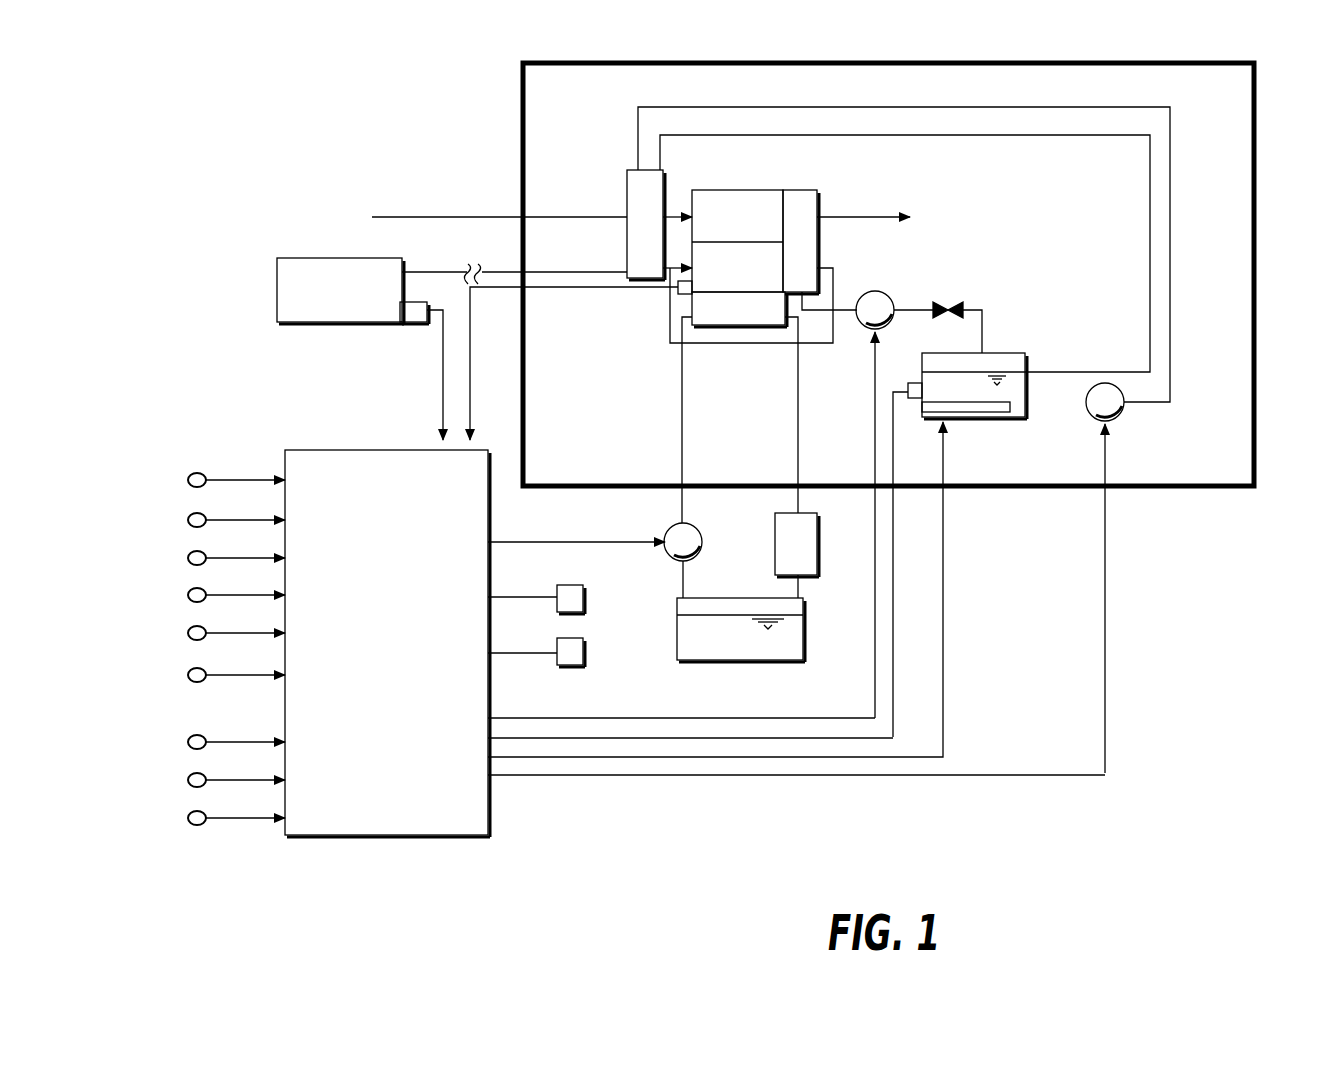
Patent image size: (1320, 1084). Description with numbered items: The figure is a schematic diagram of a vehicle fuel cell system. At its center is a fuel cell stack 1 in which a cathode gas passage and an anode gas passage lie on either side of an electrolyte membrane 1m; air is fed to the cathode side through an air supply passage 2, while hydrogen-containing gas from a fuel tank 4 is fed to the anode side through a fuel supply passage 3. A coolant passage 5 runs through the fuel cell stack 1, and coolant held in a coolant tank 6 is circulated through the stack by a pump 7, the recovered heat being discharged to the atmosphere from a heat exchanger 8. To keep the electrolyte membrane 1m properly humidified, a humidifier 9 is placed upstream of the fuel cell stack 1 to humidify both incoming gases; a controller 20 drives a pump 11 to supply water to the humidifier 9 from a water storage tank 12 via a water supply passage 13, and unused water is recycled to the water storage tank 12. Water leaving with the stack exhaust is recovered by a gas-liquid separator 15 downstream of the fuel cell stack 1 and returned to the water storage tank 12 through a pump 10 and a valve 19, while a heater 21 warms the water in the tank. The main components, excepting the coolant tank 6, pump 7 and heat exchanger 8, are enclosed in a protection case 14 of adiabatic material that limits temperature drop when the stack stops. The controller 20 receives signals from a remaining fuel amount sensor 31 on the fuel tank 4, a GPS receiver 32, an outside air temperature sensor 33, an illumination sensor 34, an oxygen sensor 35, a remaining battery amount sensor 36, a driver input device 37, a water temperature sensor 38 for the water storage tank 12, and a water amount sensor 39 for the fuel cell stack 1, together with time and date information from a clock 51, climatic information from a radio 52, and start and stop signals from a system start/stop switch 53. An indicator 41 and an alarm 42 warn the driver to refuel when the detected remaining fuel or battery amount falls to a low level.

The fuel cell stack 1 is at (776, 238).
The electrolyte membrane 1m is at (769, 246).
The air supply passage 2 is at (545, 216).
The fuel supply passage 3 is at (556, 273).
The fuel tank 4 is at (325, 323).
The coolant passage 5 is at (682, 385).
The coolant tank 6 is at (742, 645).
The pump 7 is at (676, 558).
The heat exchanger 8 is at (818, 562).
The humidifier 9 is at (640, 280).
The pump 10 is at (880, 291).
The pump 11 is at (1124, 405).
The water storage tank 12 is at (1003, 353).
The water supply passage 13 is at (1171, 243).
The protection case 14 is at (1170, 490).
The gas-liquid separator 15 is at (800, 198).
The valve 19 is at (950, 300).
The controller 20 is at (490, 797).
The heater 21 is at (1003, 412).
The remaining fuel amount sensor 31 is at (406, 324).
The GPS receiver 32 is at (188, 482).
The outside air temperature sensor 33 is at (188, 519).
The illumination sensor 34 is at (188, 558).
The oxygen sensor 35 is at (188, 594).
The remaining battery amount sensor 36 is at (188, 632).
The input device 37 is at (188, 675).
The water temperature sensor 38 is at (912, 400).
The water amount sensor 39 is at (677, 294).
The indicator 41 is at (580, 584).
The alarm 42 is at (566, 666).
The clock 51 is at (188, 741).
The radio 52 is at (188, 779).
The system start/stop switch 53 is at (188, 817).